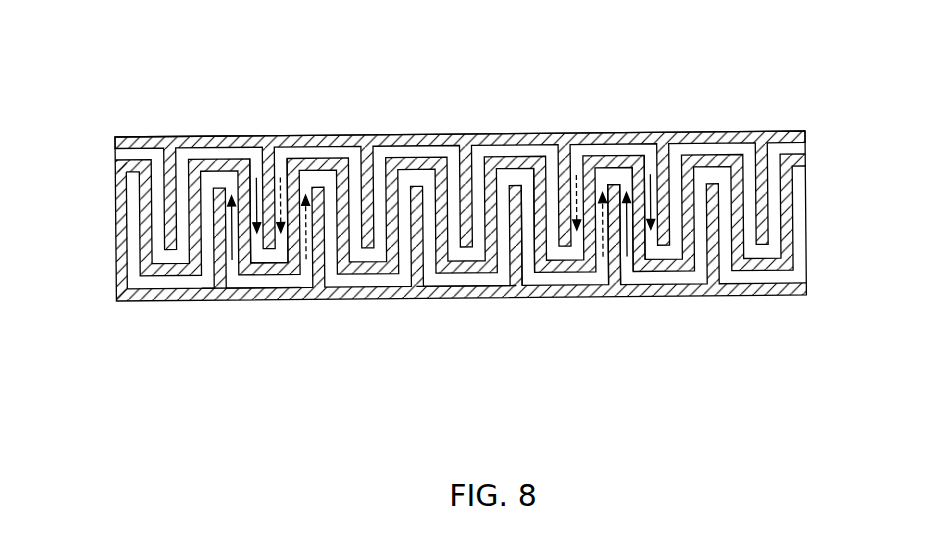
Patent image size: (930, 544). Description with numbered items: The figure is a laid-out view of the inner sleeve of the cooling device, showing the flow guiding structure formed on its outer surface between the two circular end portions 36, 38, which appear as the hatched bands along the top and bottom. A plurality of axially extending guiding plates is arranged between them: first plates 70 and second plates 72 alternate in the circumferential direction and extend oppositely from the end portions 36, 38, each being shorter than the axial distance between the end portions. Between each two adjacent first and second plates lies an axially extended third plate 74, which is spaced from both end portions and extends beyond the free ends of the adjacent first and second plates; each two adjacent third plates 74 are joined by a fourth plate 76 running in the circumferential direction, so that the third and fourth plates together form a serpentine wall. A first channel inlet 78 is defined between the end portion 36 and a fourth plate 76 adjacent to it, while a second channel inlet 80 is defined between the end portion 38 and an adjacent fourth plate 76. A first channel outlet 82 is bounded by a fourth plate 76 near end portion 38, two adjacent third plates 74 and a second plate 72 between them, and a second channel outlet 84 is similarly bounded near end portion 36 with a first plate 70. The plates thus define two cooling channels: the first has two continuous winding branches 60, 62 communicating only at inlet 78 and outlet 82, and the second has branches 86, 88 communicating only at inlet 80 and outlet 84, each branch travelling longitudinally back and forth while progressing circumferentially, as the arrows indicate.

The end portion 36 is at (743, 288).
The end portion 38 is at (738, 131).
The winding branch 60 is at (229, 236).
The winding branch 62 is at (308, 236).
The first plate 70 is at (522, 222).
The second plate 72 is at (457, 182).
The third plate 74 is at (440, 270).
The fourth plate 76 is at (463, 273).
The first channel inlet 78 is at (268, 281).
The second channel inlet 80 is at (629, 172).
The first channel outlet 82 is at (610, 182).
The second channel outlet 84 is at (270, 250).
The winding branch 86 is at (256, 178).
The winding branch 88 is at (281, 178).